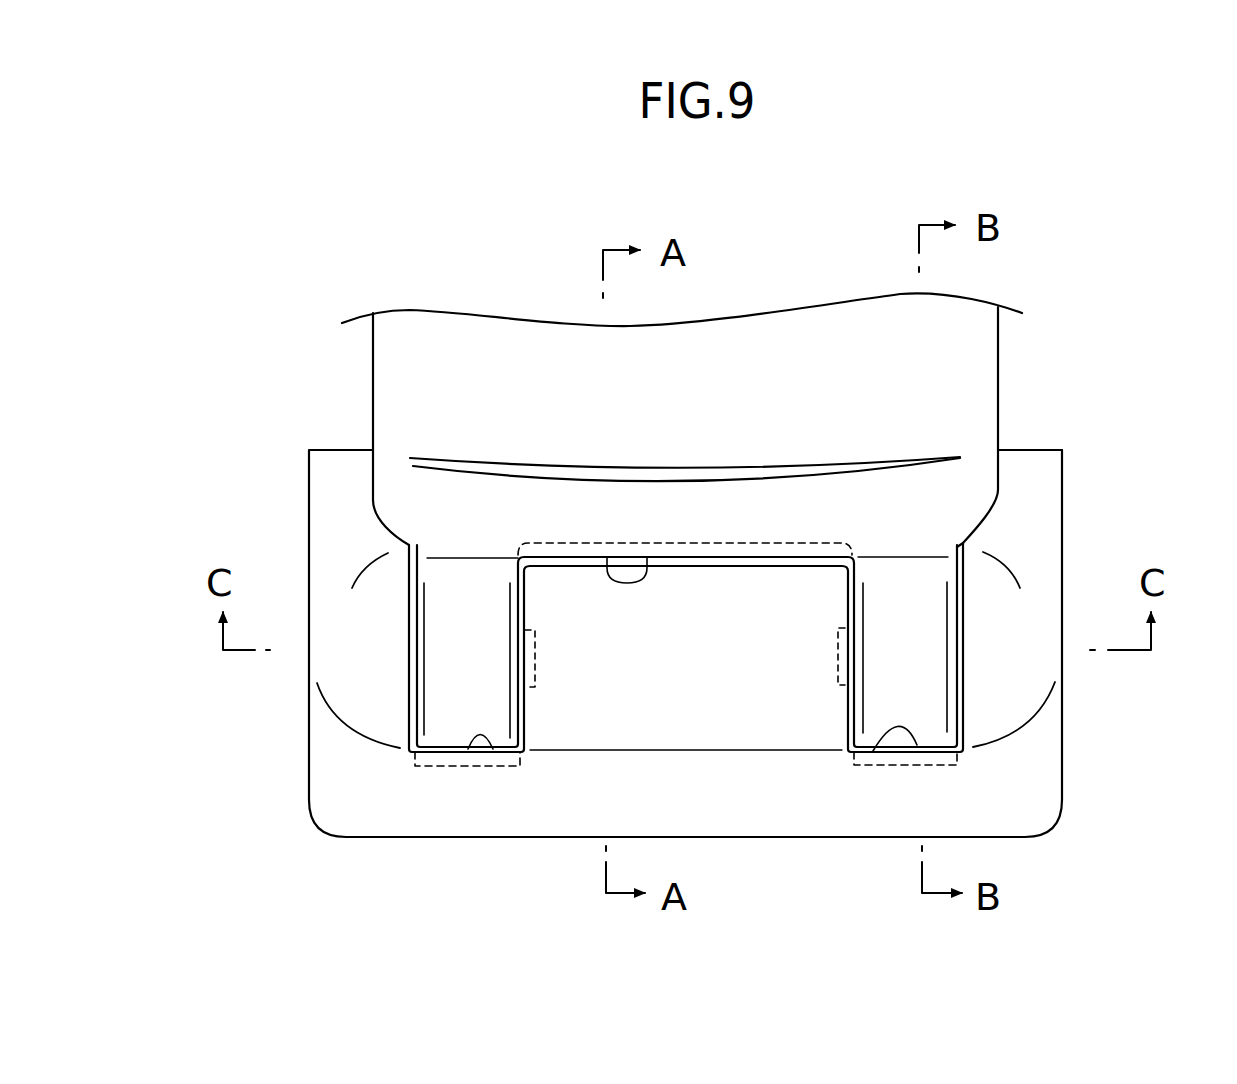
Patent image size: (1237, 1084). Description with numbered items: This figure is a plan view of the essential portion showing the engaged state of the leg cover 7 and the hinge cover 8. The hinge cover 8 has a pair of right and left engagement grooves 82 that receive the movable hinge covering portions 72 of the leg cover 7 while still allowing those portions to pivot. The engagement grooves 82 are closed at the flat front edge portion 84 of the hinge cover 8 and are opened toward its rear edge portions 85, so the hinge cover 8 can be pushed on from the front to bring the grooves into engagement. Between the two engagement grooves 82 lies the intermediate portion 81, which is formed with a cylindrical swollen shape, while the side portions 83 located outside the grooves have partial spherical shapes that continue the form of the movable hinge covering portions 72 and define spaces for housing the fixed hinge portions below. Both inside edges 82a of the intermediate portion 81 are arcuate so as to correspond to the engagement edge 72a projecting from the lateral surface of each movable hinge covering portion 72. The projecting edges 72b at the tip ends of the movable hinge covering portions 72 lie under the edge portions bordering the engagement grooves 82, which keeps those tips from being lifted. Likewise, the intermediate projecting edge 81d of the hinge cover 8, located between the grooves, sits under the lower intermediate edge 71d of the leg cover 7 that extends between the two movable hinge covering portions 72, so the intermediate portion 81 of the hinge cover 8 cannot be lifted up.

The leg cover 7 is at (1012, 349).
The hinge cover 8 is at (1094, 777).
The rear edge portion 85 is at (1030, 449).
The intermediate portion 81 is at (762, 710).
The engagement groove 82 is at (495, 751).
The inside edge 82a is at (514, 654).
The intermediate projecting edge 81d is at (765, 541).
The intermediate edge 71d is at (607, 557).
The movable hinge covering portion 72 is at (457, 613).
The engagement edge 72a is at (536, 642).
The projecting edge 72b is at (462, 768).
The side portion 83 is at (372, 712).
The front edge portion 84 is at (378, 838).